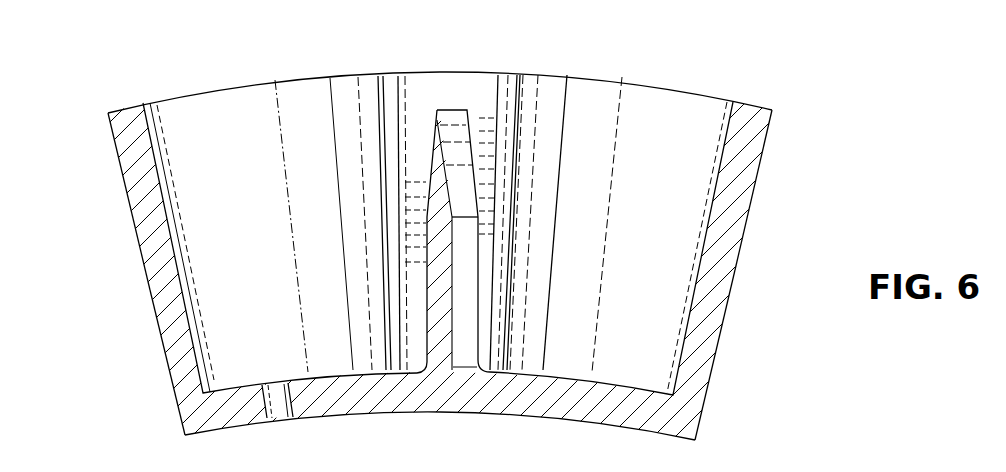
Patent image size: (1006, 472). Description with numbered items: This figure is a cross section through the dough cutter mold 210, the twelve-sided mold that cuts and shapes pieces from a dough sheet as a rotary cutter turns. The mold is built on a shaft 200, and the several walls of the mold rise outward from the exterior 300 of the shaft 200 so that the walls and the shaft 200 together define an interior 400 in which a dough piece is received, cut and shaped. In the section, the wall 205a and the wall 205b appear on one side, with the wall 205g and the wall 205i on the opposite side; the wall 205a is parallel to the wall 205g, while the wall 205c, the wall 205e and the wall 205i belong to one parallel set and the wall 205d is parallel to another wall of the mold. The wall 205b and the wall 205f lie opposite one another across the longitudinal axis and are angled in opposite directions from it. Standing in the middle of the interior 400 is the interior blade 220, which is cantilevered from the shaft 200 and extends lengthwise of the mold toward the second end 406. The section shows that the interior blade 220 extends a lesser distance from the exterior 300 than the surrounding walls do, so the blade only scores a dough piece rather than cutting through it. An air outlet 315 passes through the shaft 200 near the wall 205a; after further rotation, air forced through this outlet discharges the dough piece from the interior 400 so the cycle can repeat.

The shaft 200 is at (503, 250).
The exterior of shaft 300 is at (558, 374).
The wall 205a is at (152, 233).
The wall 205b is at (212, 295).
The wall 205c is at (380, 106).
The wall 205d is at (428, 97).
The wall 205e is at (514, 132).
The wall 205f is at (653, 112).
The wall 205g is at (713, 312).
The wall 205i is at (718, 228).
The dough cutter mold 210 is at (825, 101).
The interior blade 220 is at (465, 182).
The air outlet 315 is at (266, 383).
The interior 400 is at (152, 149).
The second end 406 is at (457, 74).